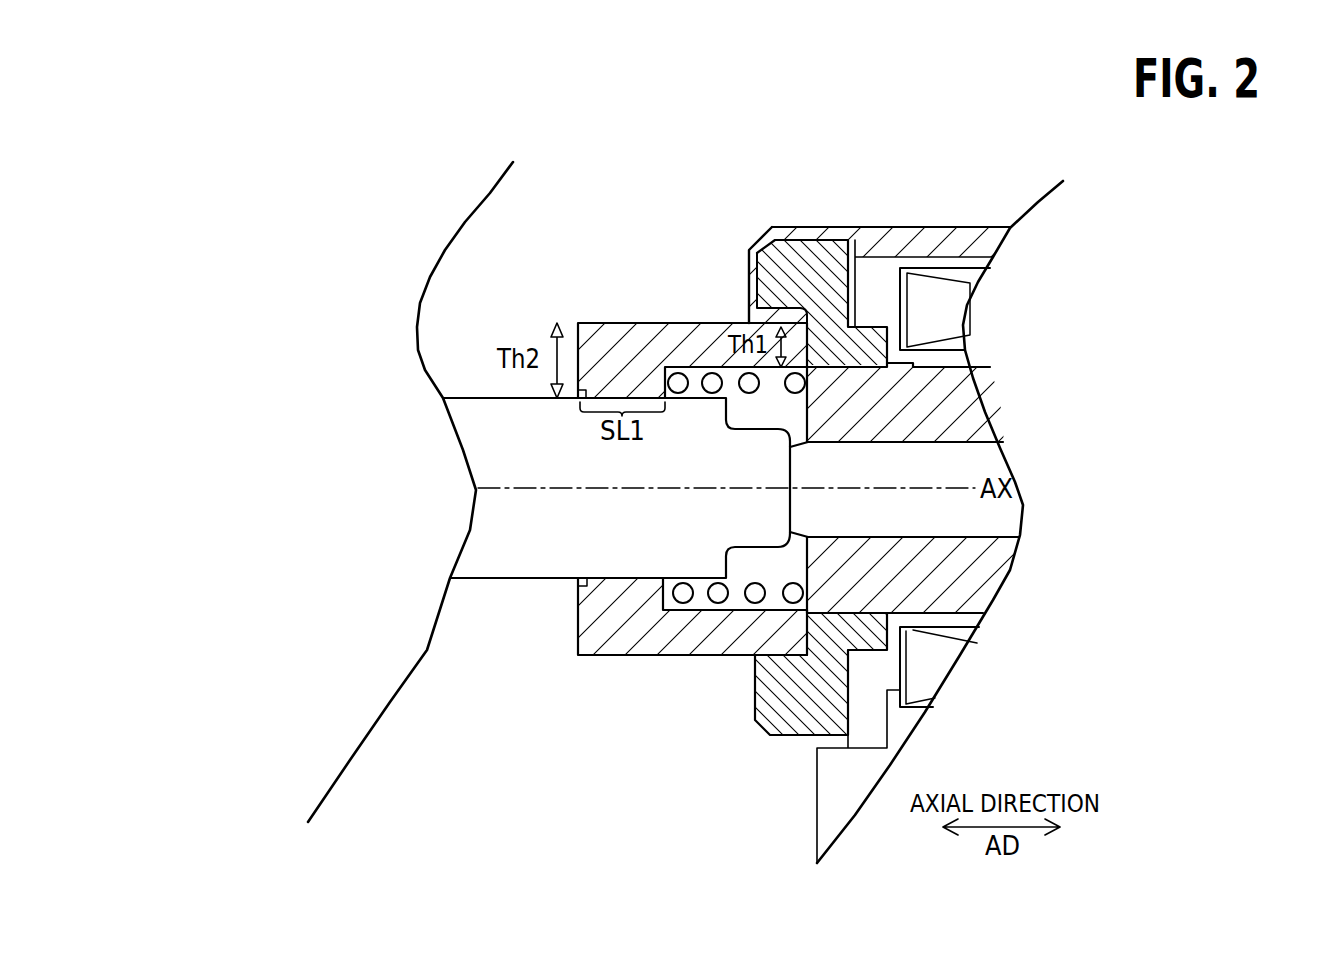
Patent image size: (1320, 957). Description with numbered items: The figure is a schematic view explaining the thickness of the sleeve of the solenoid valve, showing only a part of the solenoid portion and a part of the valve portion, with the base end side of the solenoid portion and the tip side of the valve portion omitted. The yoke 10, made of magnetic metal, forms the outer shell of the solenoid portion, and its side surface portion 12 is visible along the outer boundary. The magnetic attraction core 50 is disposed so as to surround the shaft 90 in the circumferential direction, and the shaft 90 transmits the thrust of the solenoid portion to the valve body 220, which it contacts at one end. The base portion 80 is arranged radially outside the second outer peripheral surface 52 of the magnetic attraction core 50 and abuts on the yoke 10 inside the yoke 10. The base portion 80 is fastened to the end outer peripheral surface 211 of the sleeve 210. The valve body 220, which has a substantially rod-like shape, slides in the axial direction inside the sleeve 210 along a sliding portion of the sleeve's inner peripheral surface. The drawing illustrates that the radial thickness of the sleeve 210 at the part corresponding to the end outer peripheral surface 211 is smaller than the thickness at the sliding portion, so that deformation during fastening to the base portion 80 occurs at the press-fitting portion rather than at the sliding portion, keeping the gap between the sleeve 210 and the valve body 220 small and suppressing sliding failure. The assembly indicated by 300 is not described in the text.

The yoke 10 is at (973, 205).
The side surface portion 12 is at (920, 240).
The magnetic attraction core 50 is at (868, 385).
The second outer peripheral surface 52 is at (832, 357).
The base portion 80 is at (747, 738).
The shaft 90 is at (847, 525).
The sleeve 210 is at (640, 357).
The end outer peripheral surface 211 is at (752, 257).
The valve body 220 is at (472, 412).
The rotor assembly 300 is at (596, 228).